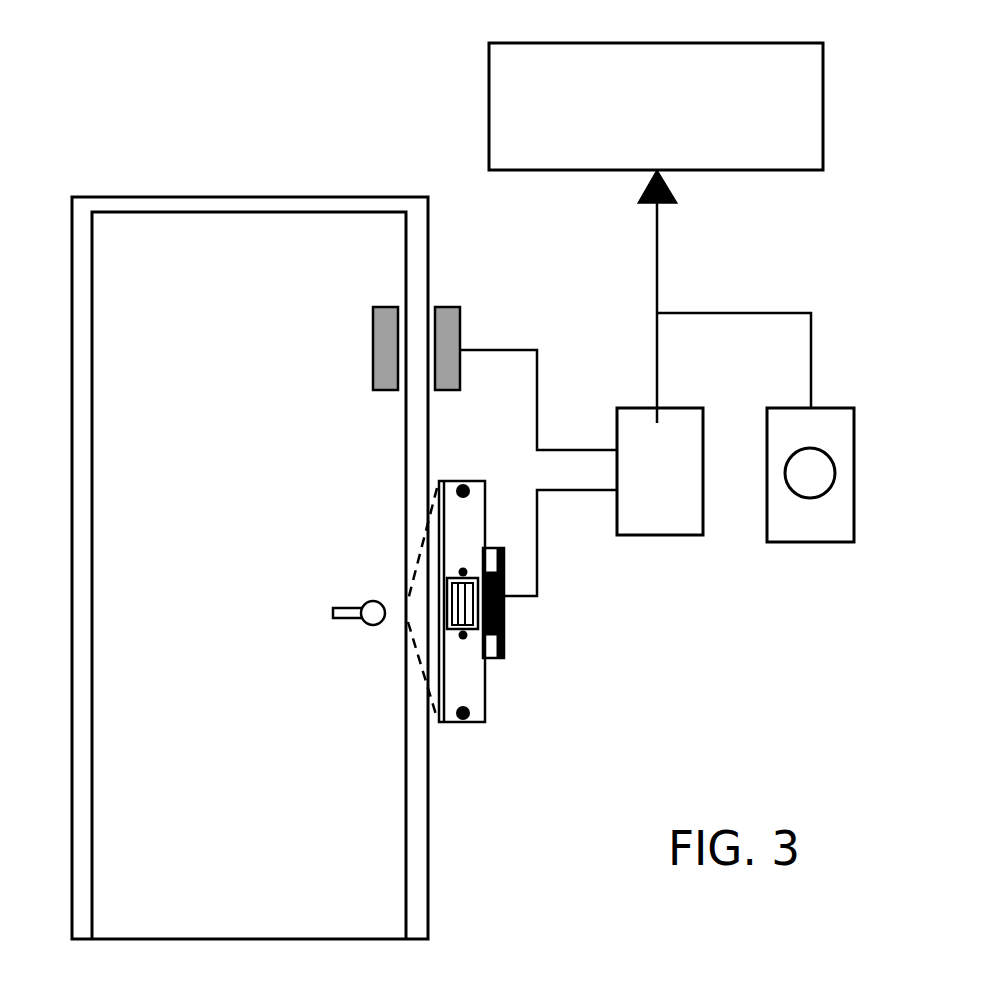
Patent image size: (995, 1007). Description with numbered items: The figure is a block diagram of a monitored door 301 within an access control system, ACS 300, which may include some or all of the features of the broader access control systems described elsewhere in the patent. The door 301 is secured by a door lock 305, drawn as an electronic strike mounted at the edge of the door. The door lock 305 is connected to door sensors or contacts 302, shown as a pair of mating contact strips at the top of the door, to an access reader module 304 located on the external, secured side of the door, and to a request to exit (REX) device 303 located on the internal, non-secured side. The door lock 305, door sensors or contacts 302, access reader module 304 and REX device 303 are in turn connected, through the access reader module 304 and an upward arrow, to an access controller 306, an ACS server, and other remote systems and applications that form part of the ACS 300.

The ACS 300 is at (45, 184).
The door 301 is at (78, 497).
The door sensors or contacts 302 is at (461, 325).
The REX device 303 is at (855, 427).
The access reader module 304 is at (650, 535).
The door lock 305 is at (463, 722).
The access controller 306 is at (823, 83).